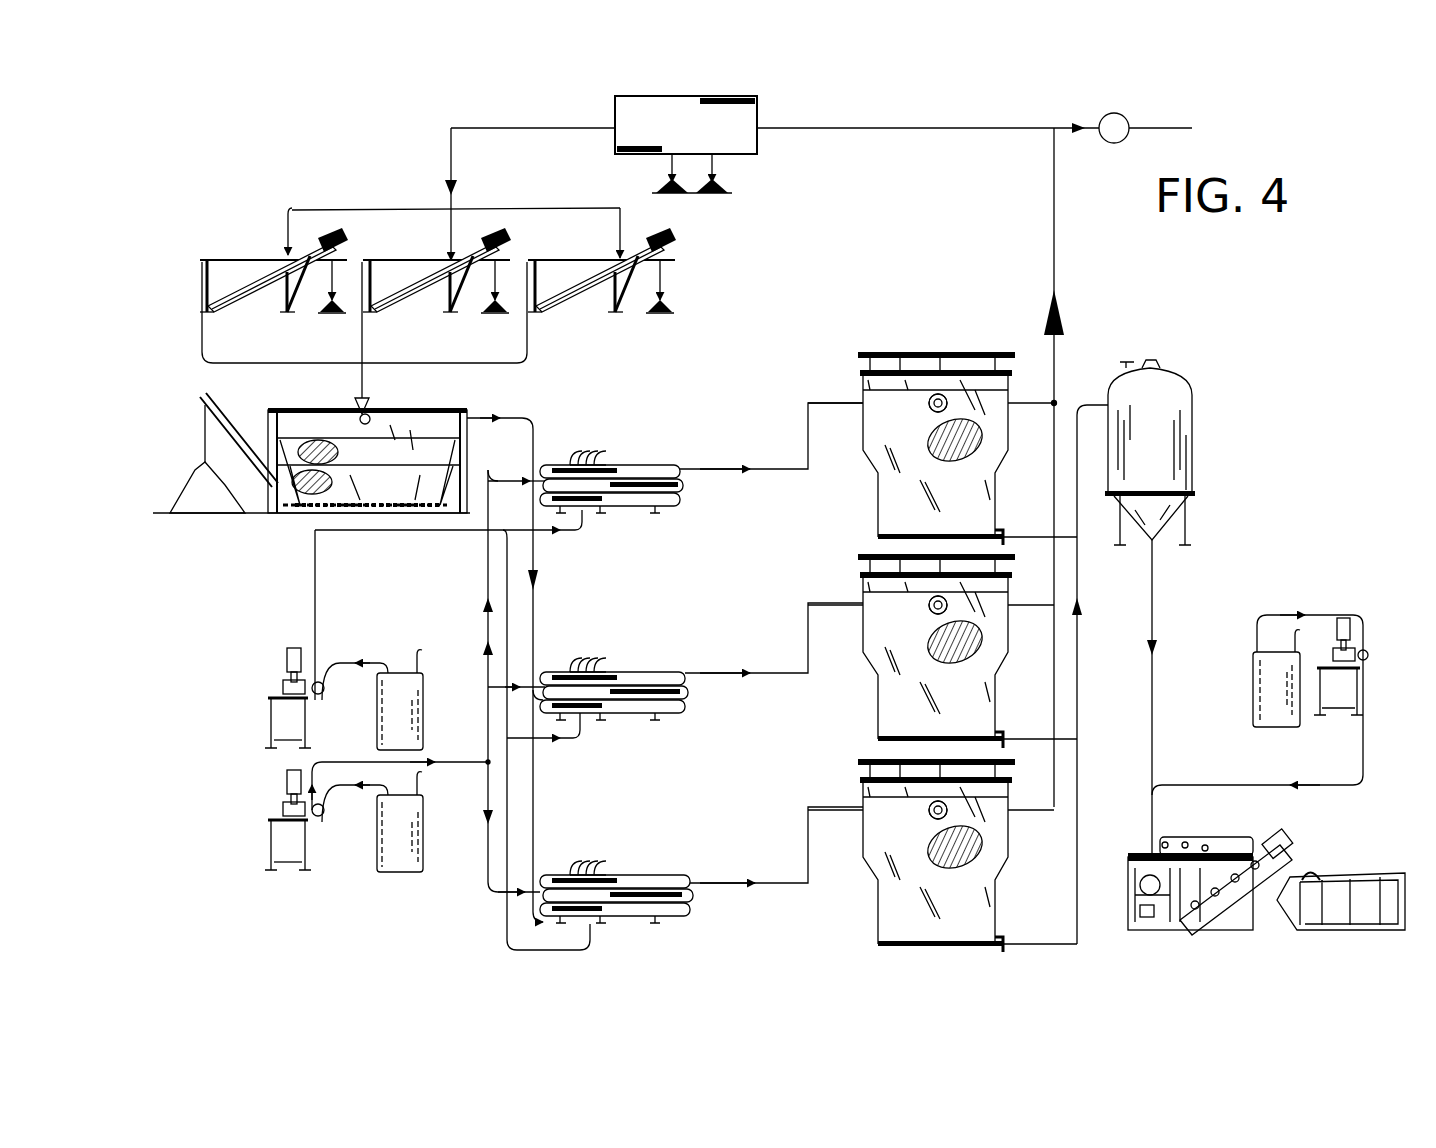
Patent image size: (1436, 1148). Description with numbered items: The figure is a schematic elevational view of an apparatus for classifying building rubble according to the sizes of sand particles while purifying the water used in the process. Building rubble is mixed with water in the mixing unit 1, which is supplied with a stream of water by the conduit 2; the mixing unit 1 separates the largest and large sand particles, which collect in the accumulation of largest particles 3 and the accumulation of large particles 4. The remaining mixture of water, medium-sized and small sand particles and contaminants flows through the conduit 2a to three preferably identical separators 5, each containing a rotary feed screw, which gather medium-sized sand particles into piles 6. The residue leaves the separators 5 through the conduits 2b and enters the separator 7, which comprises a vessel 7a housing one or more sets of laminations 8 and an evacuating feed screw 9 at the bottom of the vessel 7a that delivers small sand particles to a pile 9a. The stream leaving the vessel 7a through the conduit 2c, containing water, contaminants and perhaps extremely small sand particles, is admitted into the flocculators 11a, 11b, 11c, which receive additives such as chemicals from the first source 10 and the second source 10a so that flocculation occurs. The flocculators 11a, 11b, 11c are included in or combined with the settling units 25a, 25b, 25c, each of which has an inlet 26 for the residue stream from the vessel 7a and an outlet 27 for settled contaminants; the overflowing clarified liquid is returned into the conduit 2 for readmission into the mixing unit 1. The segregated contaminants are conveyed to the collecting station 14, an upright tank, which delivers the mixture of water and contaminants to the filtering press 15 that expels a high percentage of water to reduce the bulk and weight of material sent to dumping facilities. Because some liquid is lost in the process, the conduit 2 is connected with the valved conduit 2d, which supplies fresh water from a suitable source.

The mixing unit 1 is at (686, 125).
The conduit 2 is at (925, 145).
The conduit 2a is at (530, 142).
The conduit 2b is at (372, 410).
The conduit 2c is at (537, 445).
The valved conduit 2d is at (1087, 145).
The accumulation of separated largest particles 3 is at (655, 180).
The accumulation of separated large particles 4 is at (725, 187).
The separator 5 is at (276, 245).
The pile 6 is at (333, 318).
The separator 7 is at (492, 406).
The vessel 7a is at (455, 487).
The laminations 8 is at (340, 508).
The feed screw 9 is at (295, 505).
The pile 9a is at (200, 508).
The first source 10 is at (265, 682).
The second source 10a is at (258, 800).
The flocculator 11a is at (578, 540).
The flocculator 11b is at (592, 748).
The flocculator 11c is at (600, 946).
The collecting station 14 is at (1170, 445).
The filtering press 15 is at (1258, 825).
The settling unit 25a is at (850, 485).
The settling unit 25b is at (850, 685).
The settling unit 25c is at (856, 897).
The inlet 26 is at (924, 410).
The outlet 27 is at (1010, 525).